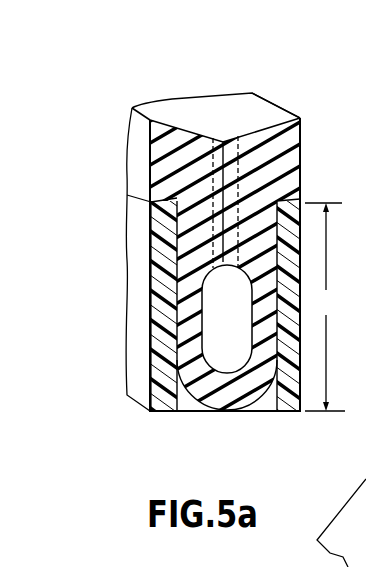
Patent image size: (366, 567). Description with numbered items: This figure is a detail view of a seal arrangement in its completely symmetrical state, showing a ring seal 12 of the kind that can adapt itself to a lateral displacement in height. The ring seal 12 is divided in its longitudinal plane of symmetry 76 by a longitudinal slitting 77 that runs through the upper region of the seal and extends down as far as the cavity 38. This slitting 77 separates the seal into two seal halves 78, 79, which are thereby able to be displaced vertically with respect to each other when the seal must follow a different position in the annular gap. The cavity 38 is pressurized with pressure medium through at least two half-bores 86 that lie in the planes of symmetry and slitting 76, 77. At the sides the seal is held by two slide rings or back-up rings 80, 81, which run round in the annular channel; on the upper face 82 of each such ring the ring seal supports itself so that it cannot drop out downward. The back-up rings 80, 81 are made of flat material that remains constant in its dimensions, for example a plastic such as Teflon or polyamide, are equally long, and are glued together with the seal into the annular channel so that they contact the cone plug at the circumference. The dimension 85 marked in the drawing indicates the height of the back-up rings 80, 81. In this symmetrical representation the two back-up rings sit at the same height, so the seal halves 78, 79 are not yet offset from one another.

The longitudinal plane of symmetry 76 is at (227, 153).
The longitudinal slitting 77 is at (218, 165).
The seal half 78 is at (158, 112).
The seal half 79 is at (262, 108).
The ring seal 12 is at (302, 126).
The back-up ring 80 is at (165, 302).
The upper face 82 is at (150, 215).
The half-bore 86 is at (176, 241).
The back-up ring 81 is at (288, 345).
The cavity 38 is at (228, 358).
The depth dimension 85 is at (325, 307).